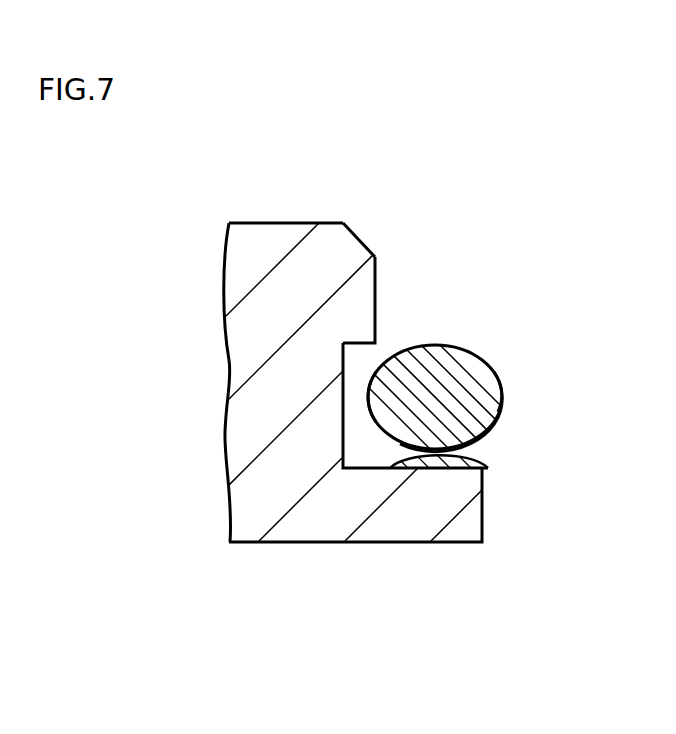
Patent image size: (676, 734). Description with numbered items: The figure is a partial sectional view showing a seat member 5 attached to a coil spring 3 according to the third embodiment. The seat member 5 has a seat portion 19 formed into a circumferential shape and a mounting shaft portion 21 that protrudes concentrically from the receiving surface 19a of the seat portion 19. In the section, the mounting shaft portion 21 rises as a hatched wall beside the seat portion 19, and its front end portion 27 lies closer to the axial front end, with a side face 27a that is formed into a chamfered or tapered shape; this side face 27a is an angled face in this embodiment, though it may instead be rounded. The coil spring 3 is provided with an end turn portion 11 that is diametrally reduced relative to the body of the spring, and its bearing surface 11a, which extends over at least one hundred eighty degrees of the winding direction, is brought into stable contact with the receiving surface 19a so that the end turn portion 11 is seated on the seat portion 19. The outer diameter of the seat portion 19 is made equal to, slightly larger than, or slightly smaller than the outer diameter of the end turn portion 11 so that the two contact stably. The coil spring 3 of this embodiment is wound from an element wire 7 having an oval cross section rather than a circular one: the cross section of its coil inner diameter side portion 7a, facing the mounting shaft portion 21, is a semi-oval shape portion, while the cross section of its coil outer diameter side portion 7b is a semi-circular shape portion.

The coil spring 3 is at (480, 340).
The seat member 5 is at (298, 531).
The element wire 7 is at (433, 384).
The coil inner diameter side portion 7a is at (373, 422).
The coil outer diameter side portion 7b is at (502, 386).
The end turn portion 11 is at (498, 412).
The bearing surface 11a is at (432, 450).
The seat portion 19 is at (455, 532).
The receiving surface 19a is at (475, 452).
The mounting shaft portion 21 is at (252, 430).
The front end portion 27 is at (293, 260).
The side face 27a is at (368, 247).